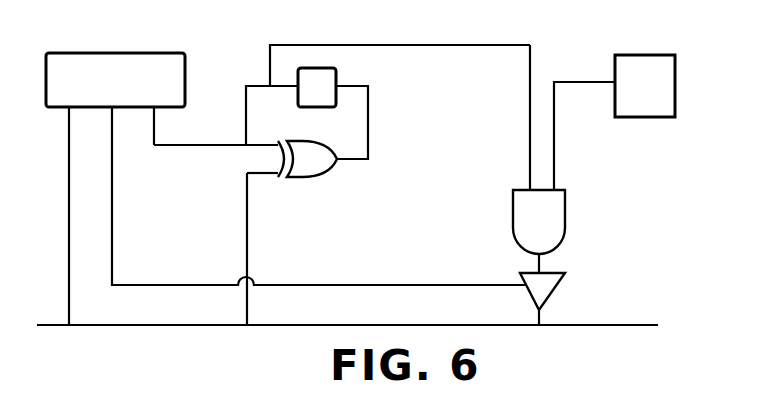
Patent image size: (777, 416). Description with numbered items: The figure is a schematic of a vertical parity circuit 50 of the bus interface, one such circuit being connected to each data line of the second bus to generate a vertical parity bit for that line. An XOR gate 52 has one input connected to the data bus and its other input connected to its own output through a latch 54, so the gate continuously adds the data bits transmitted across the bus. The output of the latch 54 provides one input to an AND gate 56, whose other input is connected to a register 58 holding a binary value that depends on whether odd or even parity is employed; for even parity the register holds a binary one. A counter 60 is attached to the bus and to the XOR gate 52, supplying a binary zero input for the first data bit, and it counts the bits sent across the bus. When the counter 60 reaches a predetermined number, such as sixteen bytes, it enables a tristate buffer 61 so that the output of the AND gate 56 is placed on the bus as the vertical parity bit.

The vertical parity circuit 50 is at (417, 237).
The XOR gate 52 is at (302, 178).
The latch 54 is at (337, 78).
The AND gate 56 is at (566, 217).
The register 58 is at (675, 83).
The counter 60 is at (137, 53).
The tristate buffer 61 is at (557, 285).